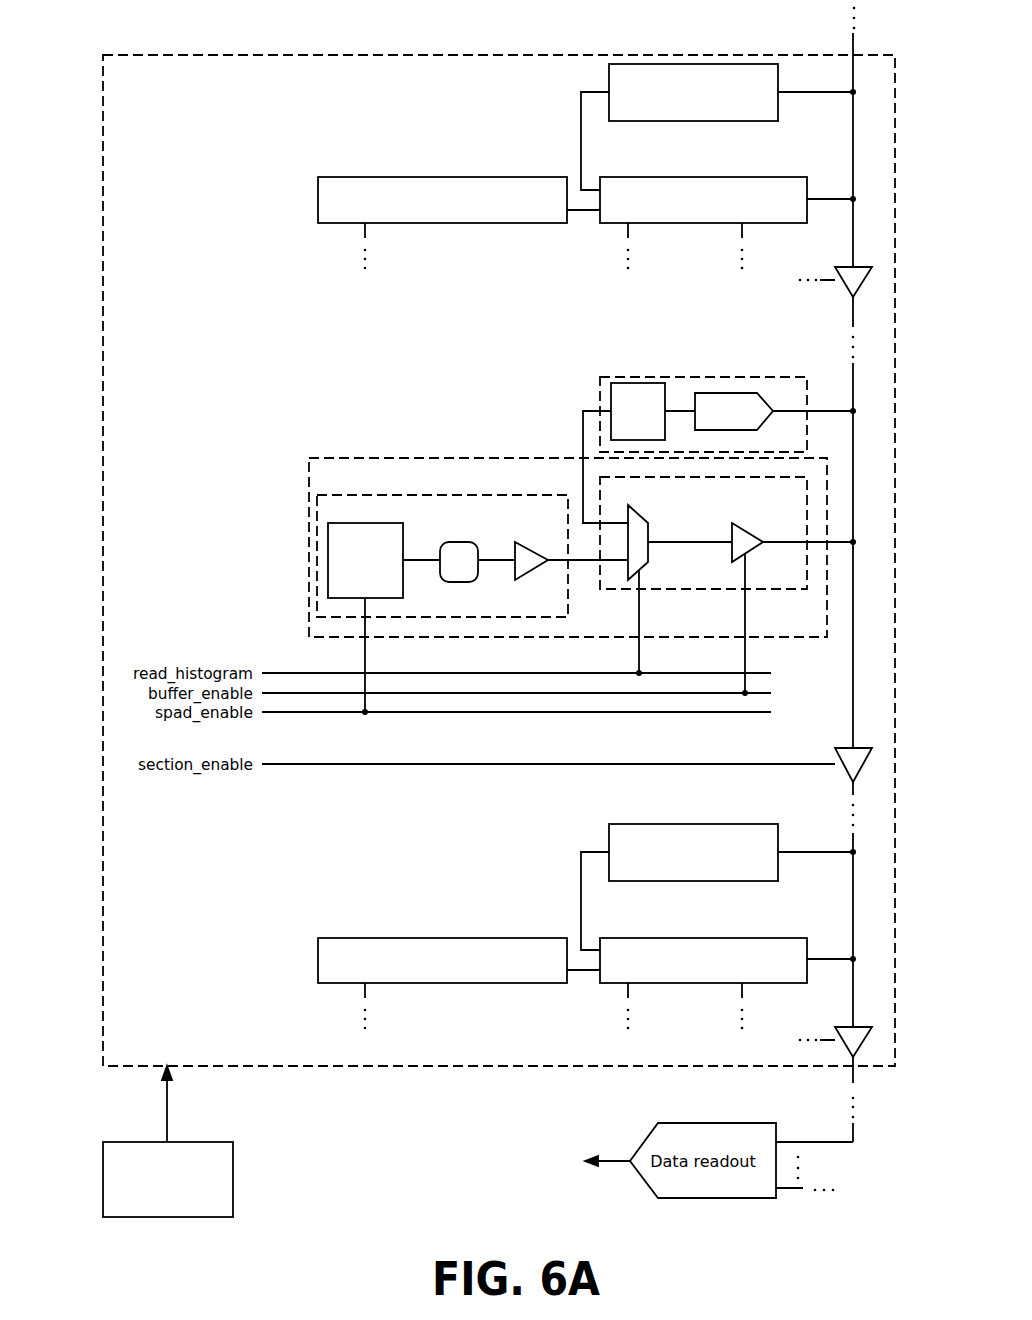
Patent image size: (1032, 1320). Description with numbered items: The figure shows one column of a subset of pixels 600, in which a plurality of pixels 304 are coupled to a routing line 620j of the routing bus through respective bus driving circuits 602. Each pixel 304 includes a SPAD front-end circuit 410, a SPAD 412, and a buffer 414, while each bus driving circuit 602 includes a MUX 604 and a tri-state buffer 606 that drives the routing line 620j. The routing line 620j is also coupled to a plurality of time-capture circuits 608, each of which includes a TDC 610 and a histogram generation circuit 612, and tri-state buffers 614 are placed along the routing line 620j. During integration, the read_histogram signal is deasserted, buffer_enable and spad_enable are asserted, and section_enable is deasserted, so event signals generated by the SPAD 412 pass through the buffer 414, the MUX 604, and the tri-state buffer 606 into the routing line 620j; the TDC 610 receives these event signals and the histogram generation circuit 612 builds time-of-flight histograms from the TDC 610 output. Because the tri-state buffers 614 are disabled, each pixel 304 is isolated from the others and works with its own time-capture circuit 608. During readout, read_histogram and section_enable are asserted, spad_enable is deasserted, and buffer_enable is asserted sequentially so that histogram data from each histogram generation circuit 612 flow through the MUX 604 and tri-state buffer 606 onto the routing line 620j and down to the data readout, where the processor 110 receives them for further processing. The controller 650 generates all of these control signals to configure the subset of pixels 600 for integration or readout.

The subset of pixels 600 is at (100, 160).
The routing line 620j is at (854, 48).
The tri-state buffer 614 is at (848, 266).
The time-capture circuit 608 is at (807, 432).
The histogram generation circuit 612 is at (665, 433).
The TDC 610 is at (745, 430).
The pixel 304 is at (334, 495).
The bus driving circuit 602 is at (752, 589).
The MUX 604 is at (632, 508).
The tri-state buffer 606 is at (743, 526).
The SPAD front-end circuit 410 is at (365, 523).
The SPAD 412 is at (458, 542).
The buffer 414 is at (526, 543).
The controller 650 is at (236, 1193).
The processor 110 is at (527, 1163).